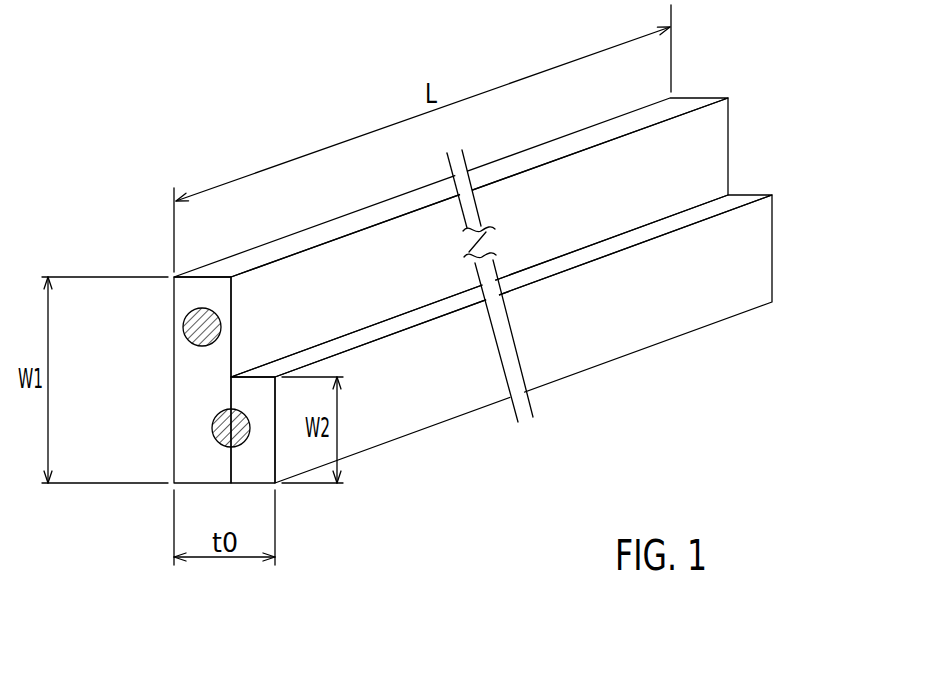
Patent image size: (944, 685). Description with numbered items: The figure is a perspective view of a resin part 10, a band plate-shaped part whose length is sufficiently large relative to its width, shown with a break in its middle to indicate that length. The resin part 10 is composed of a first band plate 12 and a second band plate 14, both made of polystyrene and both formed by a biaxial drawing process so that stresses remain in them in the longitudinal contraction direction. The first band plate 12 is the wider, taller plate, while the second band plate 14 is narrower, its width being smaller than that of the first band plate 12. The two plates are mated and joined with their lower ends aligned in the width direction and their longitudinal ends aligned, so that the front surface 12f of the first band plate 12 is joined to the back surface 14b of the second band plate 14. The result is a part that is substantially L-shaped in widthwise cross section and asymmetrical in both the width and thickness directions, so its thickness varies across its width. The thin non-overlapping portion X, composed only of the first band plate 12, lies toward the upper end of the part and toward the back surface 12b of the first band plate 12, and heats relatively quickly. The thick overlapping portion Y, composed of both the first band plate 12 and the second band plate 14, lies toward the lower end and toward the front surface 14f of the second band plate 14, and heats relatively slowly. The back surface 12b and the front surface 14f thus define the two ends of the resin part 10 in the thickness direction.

The resin part 10 is at (467, 284).
The first band plate 12 is at (445, 263).
The second band plate 14 is at (530, 359).
The front surface of the first band plate 12f is at (677, 145).
The front surface of the second band plate 14f is at (675, 305).
The back surface of the first band plate 12b is at (174, 375).
The back surface of the second band plate 14b is at (230, 452).
The non-overlapping portion X is at (200, 328).
The overlapping portion Y is at (222, 429).